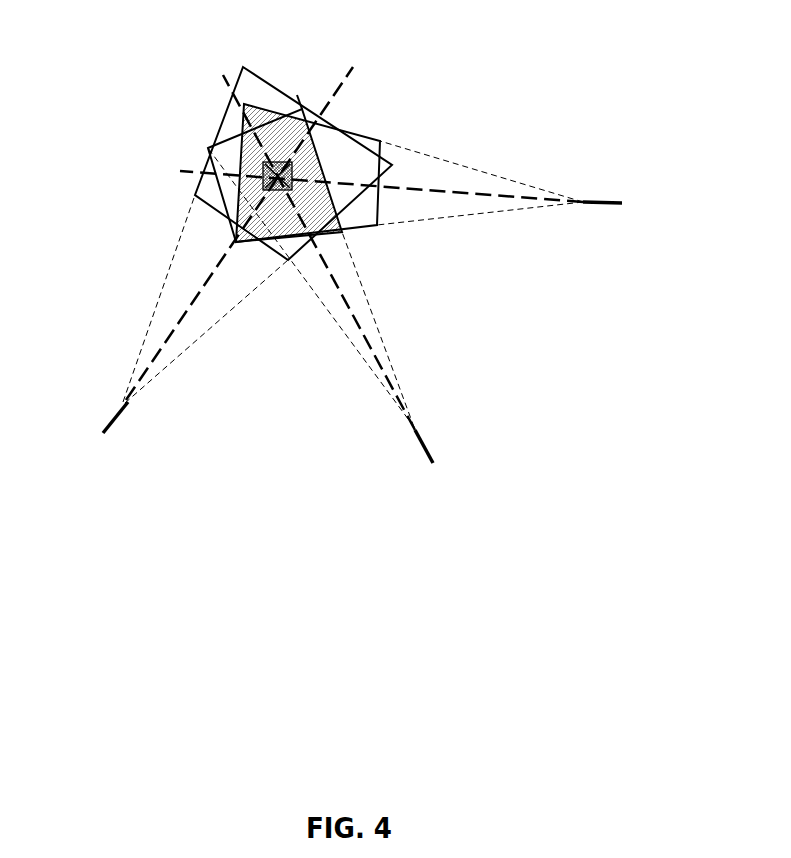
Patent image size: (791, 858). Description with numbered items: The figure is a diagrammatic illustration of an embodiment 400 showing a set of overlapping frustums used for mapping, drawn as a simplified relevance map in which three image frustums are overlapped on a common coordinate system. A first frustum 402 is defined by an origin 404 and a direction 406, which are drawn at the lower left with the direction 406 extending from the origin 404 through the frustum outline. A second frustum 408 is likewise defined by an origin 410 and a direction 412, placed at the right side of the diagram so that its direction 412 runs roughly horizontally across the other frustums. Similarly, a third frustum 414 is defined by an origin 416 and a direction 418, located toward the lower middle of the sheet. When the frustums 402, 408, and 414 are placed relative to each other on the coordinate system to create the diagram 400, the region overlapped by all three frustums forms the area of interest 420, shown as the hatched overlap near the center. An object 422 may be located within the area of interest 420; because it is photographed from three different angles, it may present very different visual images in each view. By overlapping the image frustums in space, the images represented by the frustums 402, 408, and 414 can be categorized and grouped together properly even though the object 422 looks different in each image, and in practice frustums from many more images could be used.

The embodiment 400 is at (492, 628).
The first frustum 402 is at (270, 84).
The origin 404 is at (122, 405).
The direction 406 is at (112, 425).
The second frustum 408 is at (380, 141).
The origin 410 is at (585, 200).
The direction 412 is at (618, 204).
The third frustum 414 is at (207, 148).
The origin 416 is at (416, 430).
The direction 418 is at (422, 450).
The area of interest 420 is at (263, 186).
The object 422 is at (292, 182).